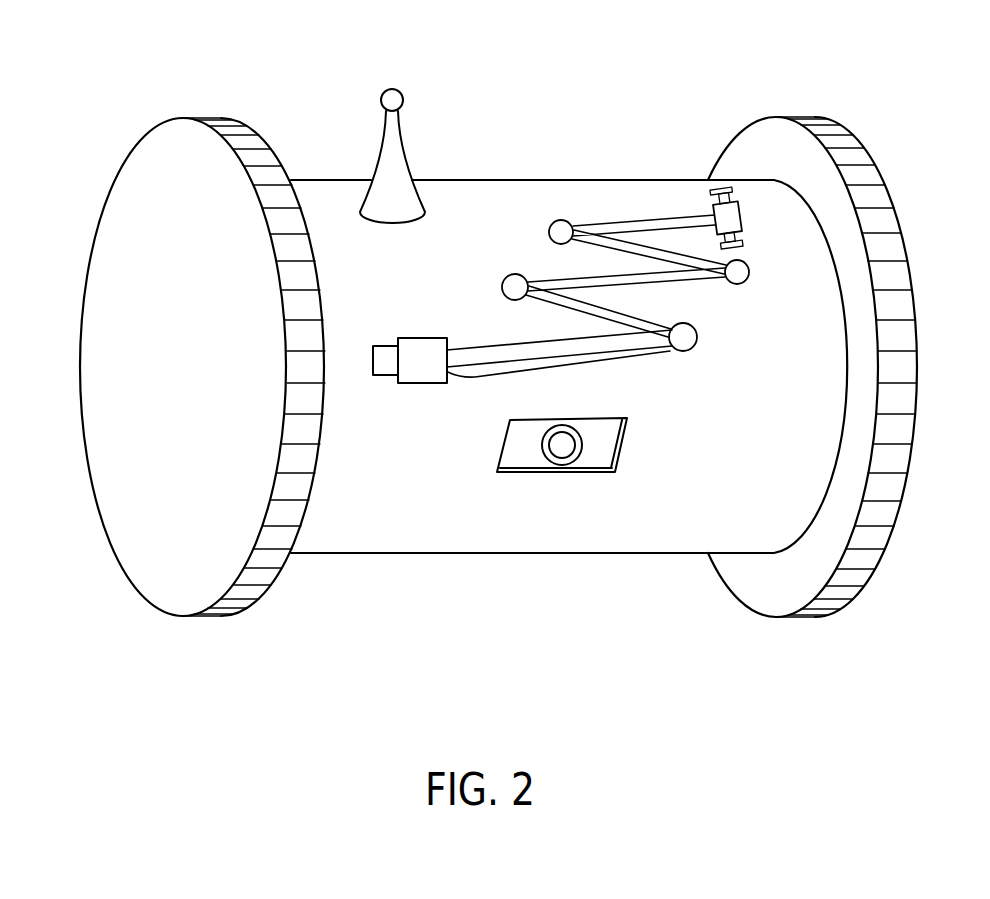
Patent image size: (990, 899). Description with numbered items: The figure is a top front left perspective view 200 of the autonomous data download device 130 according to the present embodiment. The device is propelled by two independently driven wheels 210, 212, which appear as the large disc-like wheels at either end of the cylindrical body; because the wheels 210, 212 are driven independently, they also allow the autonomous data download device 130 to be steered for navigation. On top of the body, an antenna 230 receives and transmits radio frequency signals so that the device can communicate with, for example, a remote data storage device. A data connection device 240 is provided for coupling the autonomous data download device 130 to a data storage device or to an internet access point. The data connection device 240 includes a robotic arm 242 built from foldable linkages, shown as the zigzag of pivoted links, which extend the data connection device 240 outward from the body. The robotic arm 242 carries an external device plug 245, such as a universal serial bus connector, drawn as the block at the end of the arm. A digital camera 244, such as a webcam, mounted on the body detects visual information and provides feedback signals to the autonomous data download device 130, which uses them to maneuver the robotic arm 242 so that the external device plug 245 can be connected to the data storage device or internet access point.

The top front left perspective view 200 is at (912, 118).
The autonomous data download device 130 is at (530, 555).
The independently driven wheel 210 is at (203, 617).
The independently driven wheel 212 is at (800, 618).
The antenna 230 is at (404, 148).
The data connection device 240 is at (627, 218).
The robotic arm 242 is at (483, 345).
The digital camera 244 is at (563, 470).
The external device plug 245 is at (418, 385).